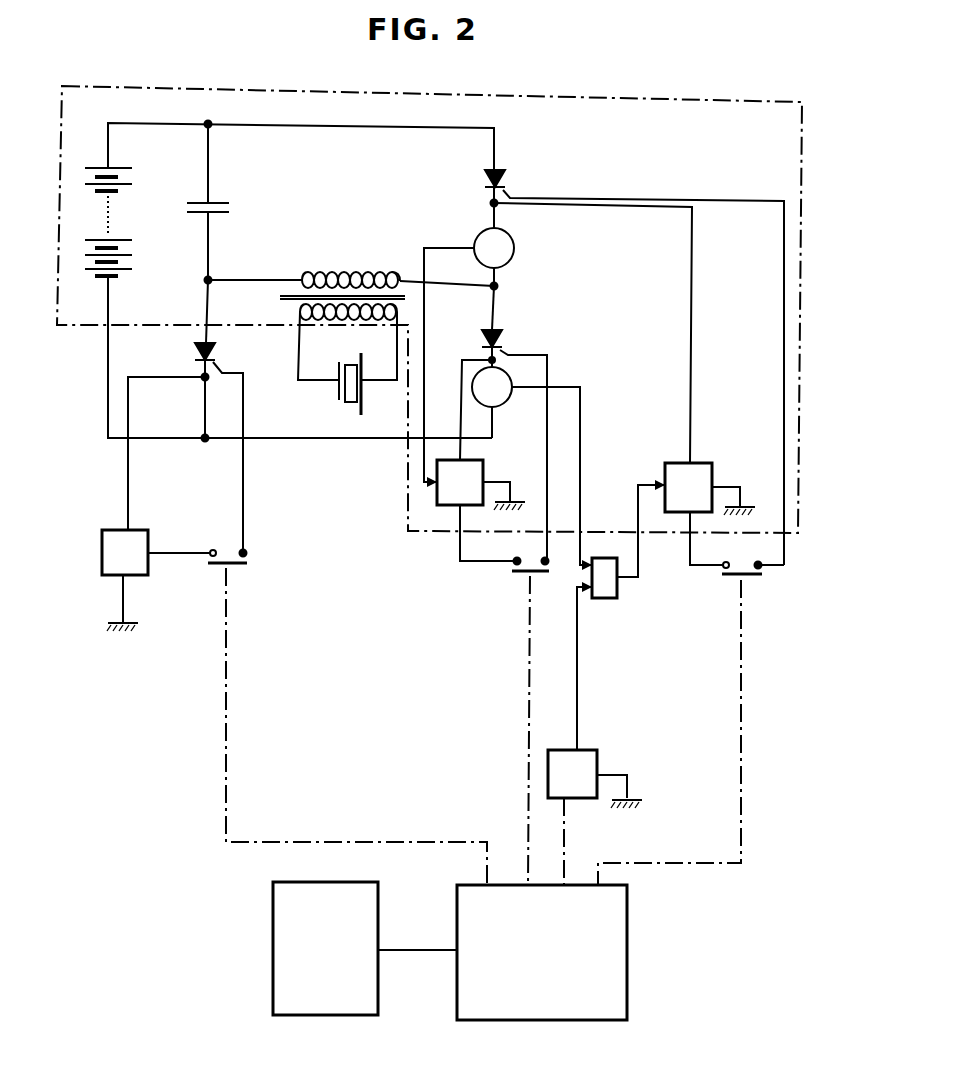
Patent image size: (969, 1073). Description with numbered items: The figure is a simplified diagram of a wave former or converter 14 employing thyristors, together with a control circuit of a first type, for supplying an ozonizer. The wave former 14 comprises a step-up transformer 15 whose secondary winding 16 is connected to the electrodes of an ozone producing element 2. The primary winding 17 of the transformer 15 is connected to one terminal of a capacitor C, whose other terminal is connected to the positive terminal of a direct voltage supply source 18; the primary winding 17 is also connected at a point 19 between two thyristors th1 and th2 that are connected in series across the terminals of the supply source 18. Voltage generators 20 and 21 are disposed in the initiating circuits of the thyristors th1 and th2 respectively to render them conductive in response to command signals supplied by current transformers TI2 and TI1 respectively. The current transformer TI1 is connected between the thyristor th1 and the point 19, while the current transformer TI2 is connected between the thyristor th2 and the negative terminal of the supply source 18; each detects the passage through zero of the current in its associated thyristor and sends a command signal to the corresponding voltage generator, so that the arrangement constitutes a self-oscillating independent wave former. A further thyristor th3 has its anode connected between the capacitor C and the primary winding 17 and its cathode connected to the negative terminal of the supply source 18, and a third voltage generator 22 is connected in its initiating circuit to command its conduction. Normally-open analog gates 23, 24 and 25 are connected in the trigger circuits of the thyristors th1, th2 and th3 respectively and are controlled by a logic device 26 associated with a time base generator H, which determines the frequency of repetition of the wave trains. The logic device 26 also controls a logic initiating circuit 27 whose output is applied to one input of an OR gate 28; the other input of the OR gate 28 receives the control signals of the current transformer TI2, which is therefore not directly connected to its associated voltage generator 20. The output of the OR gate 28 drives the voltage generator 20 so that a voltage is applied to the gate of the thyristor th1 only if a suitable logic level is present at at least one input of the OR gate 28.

The wave former 14 is at (158, 85).
The direct voltage supply source 18 is at (122, 224).
The capacitor C is at (228, 207).
The step-up transformer 15 is at (351, 277).
The primary winding 17 is at (351, 275).
The secondary winding 16 is at (302, 310).
The ozone producing element 2 is at (338, 403).
The thyristor th1 is at (504, 178).
The thyristor th2 is at (504, 340).
The thyristor th3 is at (192, 352).
The current transformer TI1 is at (514, 244).
The current transformer TI2 is at (504, 400).
The connection point 19 is at (500, 286).
The voltage generator 20 is at (712, 470).
The voltage generator 21 is at (483, 474).
The third voltage generator 22 is at (102, 557).
The analog gate 23 is at (754, 580).
The analog gate 24 is at (514, 576).
The analog gate 25 is at (244, 568).
The logic device 26 is at (542, 952).
The logic initiating circuit 27 is at (598, 760).
The OR gate 28 is at (602, 600).
The time base generator H is at (365, 948).